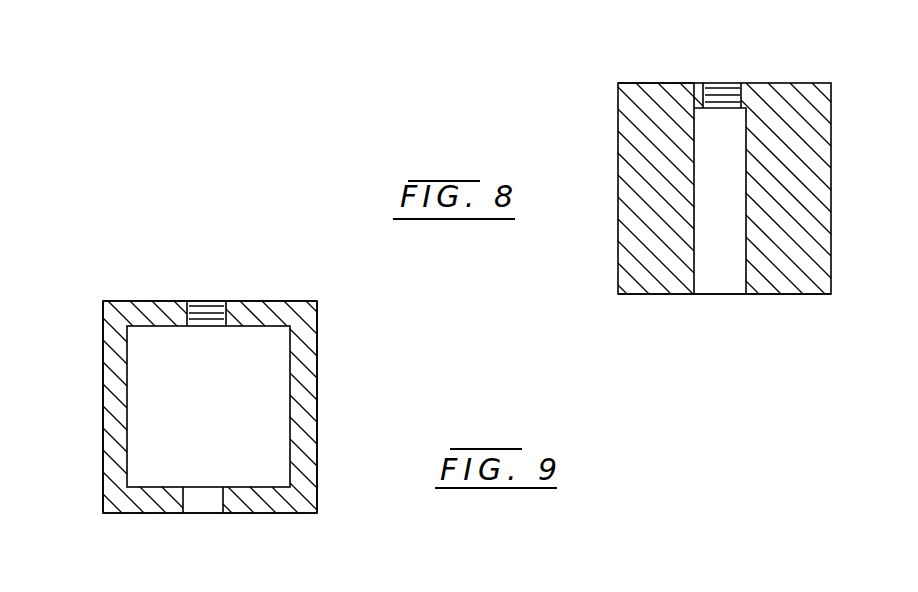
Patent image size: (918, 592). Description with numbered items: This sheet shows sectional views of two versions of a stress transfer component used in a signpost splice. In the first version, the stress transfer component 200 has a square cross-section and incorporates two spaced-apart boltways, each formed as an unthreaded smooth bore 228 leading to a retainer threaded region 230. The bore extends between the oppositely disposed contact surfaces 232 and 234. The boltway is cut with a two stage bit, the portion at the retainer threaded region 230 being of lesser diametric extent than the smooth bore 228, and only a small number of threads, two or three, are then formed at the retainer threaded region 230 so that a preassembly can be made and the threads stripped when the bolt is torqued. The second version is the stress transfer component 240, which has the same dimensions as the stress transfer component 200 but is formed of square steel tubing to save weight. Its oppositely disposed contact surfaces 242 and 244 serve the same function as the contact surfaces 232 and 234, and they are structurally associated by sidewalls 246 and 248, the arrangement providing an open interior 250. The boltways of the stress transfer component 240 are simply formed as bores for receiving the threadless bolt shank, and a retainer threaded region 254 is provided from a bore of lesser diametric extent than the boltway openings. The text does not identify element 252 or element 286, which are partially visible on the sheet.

In FIG. 8, the stress transfer component 200 is at (563, 298).
In FIG. 8, the smooth bore 228 is at (694, 155).
In FIG. 8, the retainer threaded region 230 is at (726, 88).
In FIG. 8, the contact surface 232 is at (664, 295).
In FIG. 8, the contact surface 234 is at (660, 83).
In FIG. 9, the stress transfer component 240 is at (418, 395).
In FIG. 9, the contact surface 242 is at (146, 514).
In FIG. 9, the contact surface 244 is at (270, 300).
In FIG. 9, the sidewall 246 is at (312, 360).
In FIG. 9, the sidewall 248 is at (101, 442).
In FIG. 9, the open interior 250 is at (162, 392).
In FIG. 9, the bottom opening 252 is at (200, 508).
In FIG. 9, the retainer threaded region 254 is at (212, 306).
In FIG. 9, the element 286 is at (512, 591).